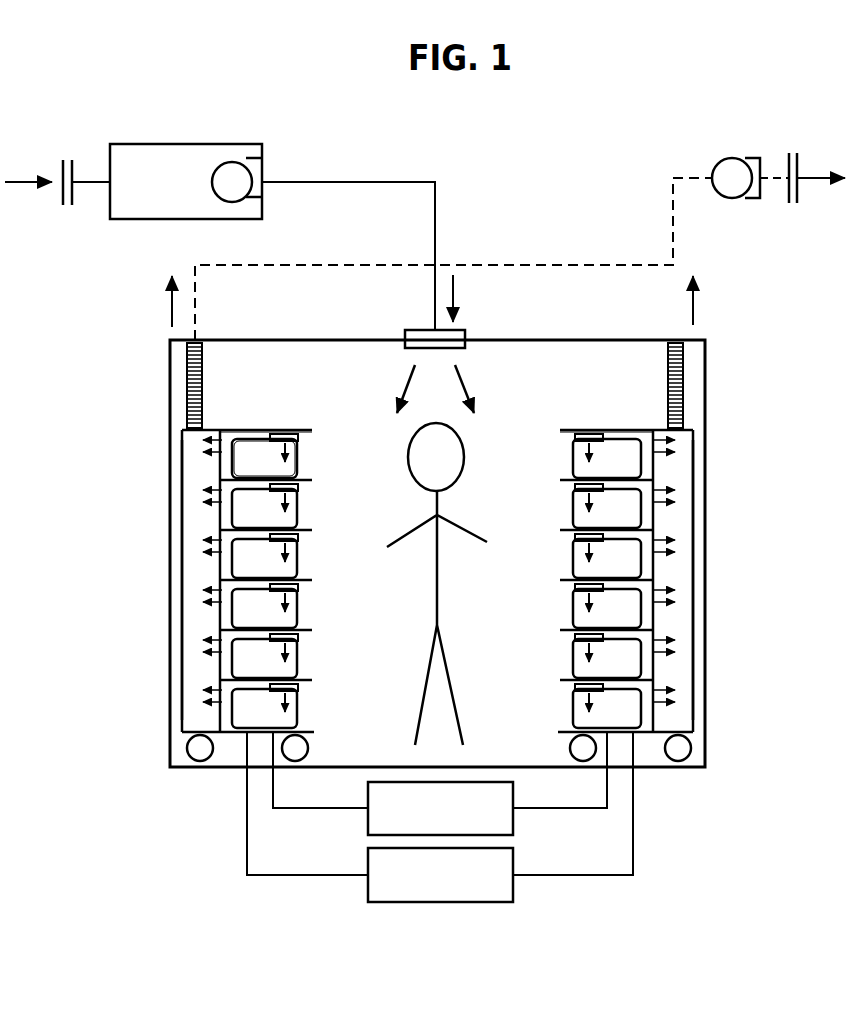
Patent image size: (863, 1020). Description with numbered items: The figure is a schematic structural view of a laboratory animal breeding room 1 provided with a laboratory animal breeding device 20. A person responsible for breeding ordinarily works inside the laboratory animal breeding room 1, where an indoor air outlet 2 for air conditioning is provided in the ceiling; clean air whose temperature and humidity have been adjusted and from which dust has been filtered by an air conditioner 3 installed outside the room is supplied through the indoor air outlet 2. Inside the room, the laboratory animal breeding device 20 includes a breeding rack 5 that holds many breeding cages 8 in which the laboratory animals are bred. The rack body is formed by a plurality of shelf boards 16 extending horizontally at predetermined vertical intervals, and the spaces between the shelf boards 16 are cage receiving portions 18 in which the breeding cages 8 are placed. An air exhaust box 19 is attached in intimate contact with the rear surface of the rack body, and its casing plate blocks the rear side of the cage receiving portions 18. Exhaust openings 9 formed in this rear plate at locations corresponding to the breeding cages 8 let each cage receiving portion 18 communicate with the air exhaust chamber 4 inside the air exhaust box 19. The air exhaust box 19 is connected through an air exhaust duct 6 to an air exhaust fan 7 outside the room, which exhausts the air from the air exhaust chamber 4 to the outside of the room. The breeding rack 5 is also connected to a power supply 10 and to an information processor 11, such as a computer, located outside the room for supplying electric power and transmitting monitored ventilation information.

The laboratory animal breeding room 1 is at (706, 678).
The indoor air outlet 2 is at (410, 332).
The air conditioner 3 is at (175, 144).
The air exhaust chamber 4 is at (200, 472).
The breeding rack 5 is at (560, 425).
The air exhaust duct 6 is at (187, 382).
The air exhaust fan 7 is at (721, 158).
The breeding cage 8 is at (250, 455).
The exhaust opening 9 is at (660, 578).
The power supply 10 is at (368, 822).
The information processor 11 is at (513, 858).
The shelf board 16 is at (300, 488).
The cage receiving portion 18 is at (298, 457).
The air exhaust box 19 is at (180, 530).
The laboratory animal breeding device 20 is at (315, 421).